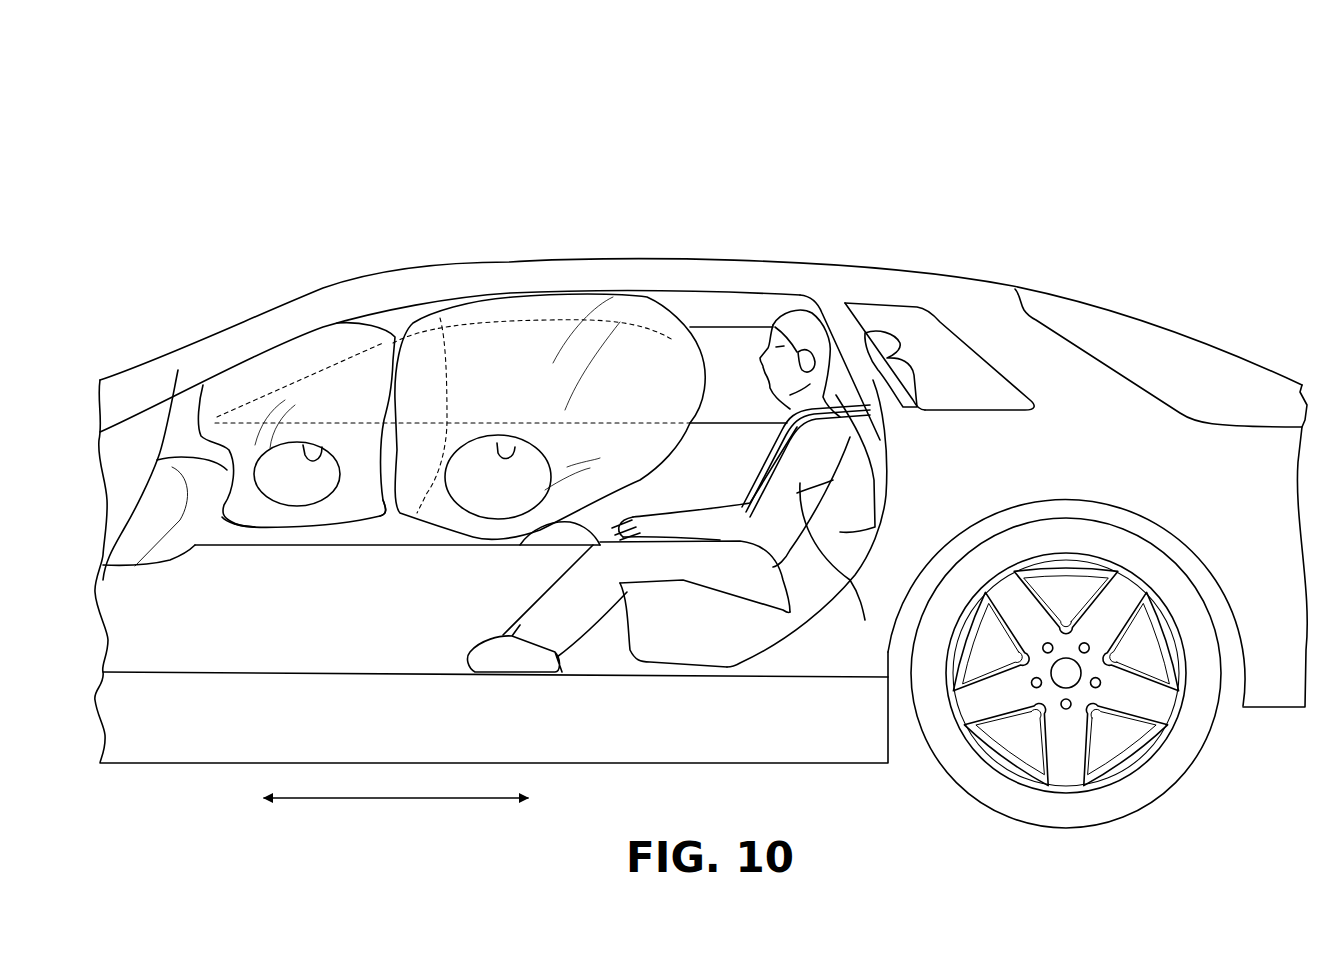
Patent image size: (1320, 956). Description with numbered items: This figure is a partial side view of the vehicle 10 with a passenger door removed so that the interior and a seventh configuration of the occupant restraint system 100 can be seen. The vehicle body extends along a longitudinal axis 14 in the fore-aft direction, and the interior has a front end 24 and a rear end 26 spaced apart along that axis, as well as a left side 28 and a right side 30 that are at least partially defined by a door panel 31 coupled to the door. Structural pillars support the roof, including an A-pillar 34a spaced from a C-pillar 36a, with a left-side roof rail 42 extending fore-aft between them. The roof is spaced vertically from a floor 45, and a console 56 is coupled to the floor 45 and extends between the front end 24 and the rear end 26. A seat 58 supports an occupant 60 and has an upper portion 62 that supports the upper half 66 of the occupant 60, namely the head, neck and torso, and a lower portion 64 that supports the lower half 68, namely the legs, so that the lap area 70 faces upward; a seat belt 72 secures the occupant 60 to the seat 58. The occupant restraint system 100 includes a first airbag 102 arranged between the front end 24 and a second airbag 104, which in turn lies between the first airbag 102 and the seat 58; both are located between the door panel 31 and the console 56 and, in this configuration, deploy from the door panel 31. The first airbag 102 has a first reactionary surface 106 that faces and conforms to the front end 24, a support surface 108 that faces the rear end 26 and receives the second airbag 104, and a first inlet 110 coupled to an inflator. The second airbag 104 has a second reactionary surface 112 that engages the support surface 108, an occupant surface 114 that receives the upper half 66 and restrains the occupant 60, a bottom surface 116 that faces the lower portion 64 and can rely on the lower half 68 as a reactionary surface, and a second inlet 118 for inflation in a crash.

The vehicle 10 is at (318, 142).
The longitudinal axis 14 is at (398, 800).
The front end 24 is at (172, 436).
The rear end 26 is at (924, 348).
The left side 28 is at (415, 652).
The right side 30 is at (716, 313).
The door panel 31 is at (752, 462).
The A-pillar 34a is at (238, 348).
The C-pillar 36a is at (1017, 352).
The left-side roof rail 42 is at (605, 283).
The floor 45 is at (297, 652).
The console 56 is at (188, 522).
The seat 58 is at (877, 325).
The occupant 60 is at (763, 312).
The upper portion 62 is at (887, 472).
The lower portion 64 is at (687, 645).
The upper half 66 is at (865, 620).
The lower half 68 is at (603, 558).
The lap area 70 is at (697, 493).
The seat belt 72 is at (870, 430).
The occupant restraint system 100 is at (394, 326).
The first airbag 102 is at (320, 337).
The second airbag 104 is at (537, 300).
The first reactionary surface 106 is at (178, 370).
The support surface 108 is at (440, 318).
The first inlet 110 is at (322, 447).
The second reactionary surface 112 is at (385, 518).
The occupant surface 114 is at (690, 316).
The bottom surface 116 is at (540, 535).
The second inlet 118 is at (515, 447).